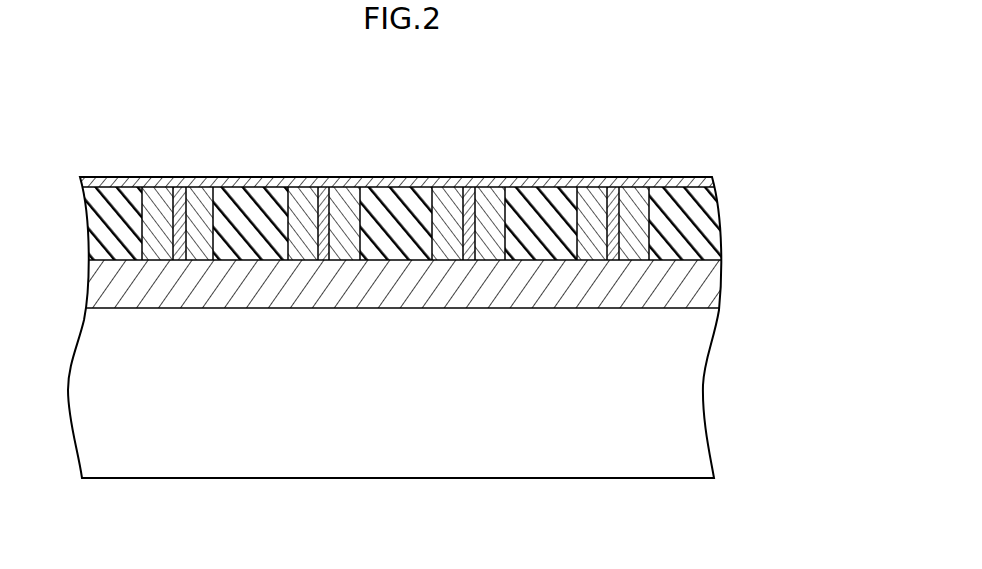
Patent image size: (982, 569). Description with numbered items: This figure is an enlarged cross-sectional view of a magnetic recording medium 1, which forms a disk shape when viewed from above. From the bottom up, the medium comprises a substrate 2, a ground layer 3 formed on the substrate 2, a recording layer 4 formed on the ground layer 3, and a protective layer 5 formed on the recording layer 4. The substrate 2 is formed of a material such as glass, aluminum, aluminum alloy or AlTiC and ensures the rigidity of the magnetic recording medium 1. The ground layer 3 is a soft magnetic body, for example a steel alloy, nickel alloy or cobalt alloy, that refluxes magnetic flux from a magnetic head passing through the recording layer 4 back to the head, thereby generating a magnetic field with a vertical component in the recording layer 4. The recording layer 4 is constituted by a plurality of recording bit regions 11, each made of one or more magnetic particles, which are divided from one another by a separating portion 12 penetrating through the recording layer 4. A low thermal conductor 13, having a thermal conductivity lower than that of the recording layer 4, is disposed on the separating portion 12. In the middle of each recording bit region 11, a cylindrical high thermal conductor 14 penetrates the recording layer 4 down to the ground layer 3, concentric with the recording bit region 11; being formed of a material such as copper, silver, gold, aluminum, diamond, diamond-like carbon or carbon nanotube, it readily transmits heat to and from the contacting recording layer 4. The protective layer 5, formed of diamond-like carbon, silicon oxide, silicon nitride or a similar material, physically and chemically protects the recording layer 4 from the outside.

The magnetic recording medium 1 is at (810, 153).
The substrate 2 is at (701, 390).
The ground layer 3 is at (718, 283).
The recording layer 4 is at (423, 184).
The protective layer 5 is at (689, 181).
The recording bit region 11 is at (348, 192).
The separating portion 12 is at (453, 223).
The low thermal conductor 13 is at (722, 218).
The high thermal conductor 14 is at (320, 191).